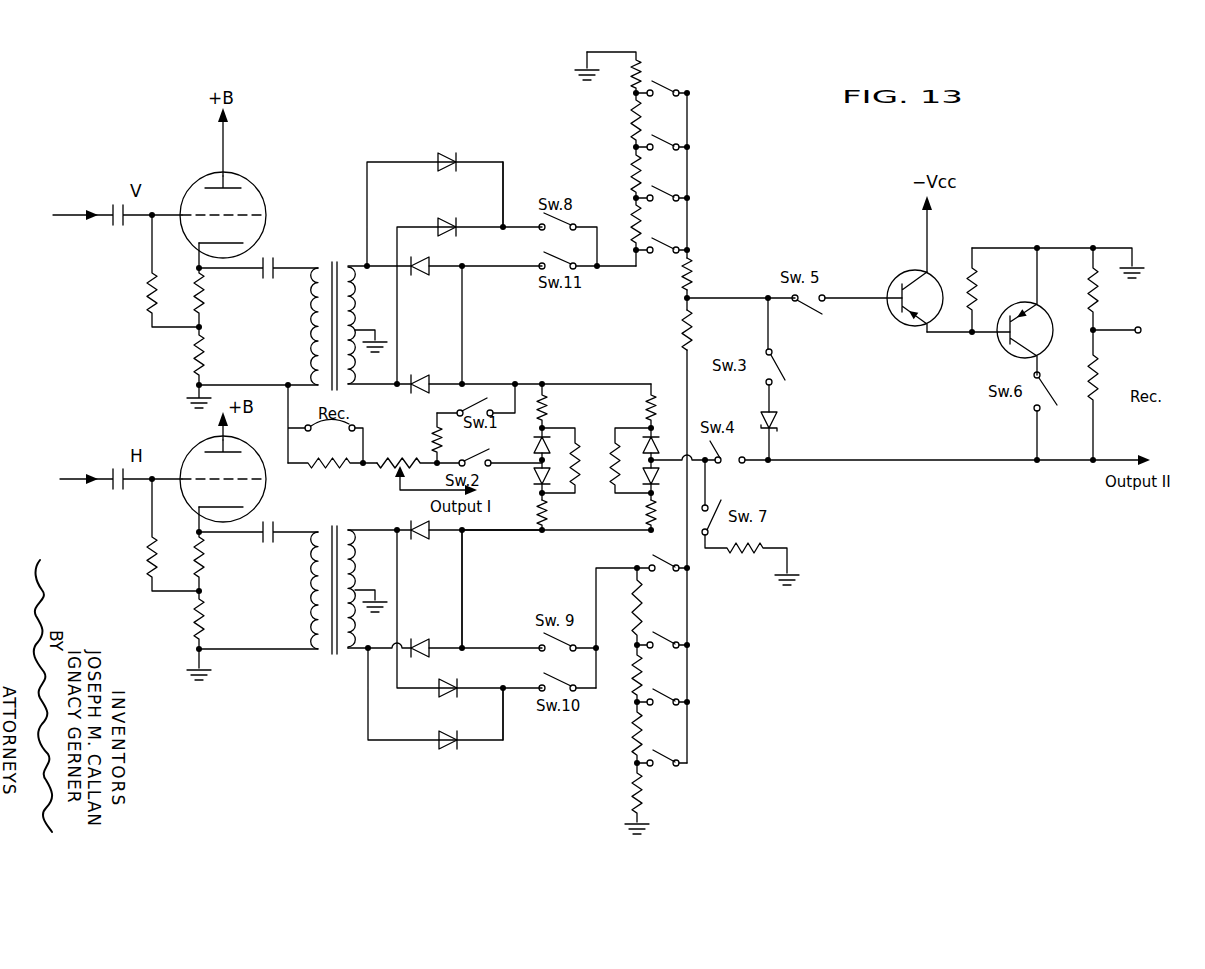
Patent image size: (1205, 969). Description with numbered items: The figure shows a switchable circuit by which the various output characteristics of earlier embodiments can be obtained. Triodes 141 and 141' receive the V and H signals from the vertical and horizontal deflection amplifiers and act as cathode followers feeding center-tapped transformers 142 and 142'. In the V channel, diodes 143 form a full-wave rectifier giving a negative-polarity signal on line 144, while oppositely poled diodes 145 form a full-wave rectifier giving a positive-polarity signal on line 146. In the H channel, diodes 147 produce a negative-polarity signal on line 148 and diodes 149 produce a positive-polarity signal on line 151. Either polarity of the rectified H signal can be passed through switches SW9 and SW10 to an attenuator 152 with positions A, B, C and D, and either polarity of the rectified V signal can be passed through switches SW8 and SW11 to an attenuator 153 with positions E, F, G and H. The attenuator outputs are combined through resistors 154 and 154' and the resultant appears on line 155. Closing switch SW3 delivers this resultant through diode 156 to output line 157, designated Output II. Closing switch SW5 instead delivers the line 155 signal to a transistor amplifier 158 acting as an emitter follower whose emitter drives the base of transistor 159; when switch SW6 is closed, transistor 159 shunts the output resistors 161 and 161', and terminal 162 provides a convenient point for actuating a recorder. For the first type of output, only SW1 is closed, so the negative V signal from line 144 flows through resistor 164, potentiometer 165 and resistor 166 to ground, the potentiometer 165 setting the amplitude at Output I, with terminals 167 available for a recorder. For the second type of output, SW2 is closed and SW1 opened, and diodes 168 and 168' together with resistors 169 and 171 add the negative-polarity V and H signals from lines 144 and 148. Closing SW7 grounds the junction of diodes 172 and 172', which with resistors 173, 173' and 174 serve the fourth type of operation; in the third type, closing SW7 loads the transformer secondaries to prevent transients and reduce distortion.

The triode 141 is at (247, 209).
The triode 141' is at (211, 468).
The center-tapped transformer 142 is at (349, 305).
The center-tapped transformer 142' is at (349, 577).
The diodes 143 is at (420, 277).
The line 144 is at (463, 312).
The diodes 145 is at (453, 200).
The line 146 is at (503, 181).
The diodes 147 is at (420, 541).
The line 148 is at (463, 582).
The diodes 149 is at (448, 706).
The line 151 is at (505, 718).
The attenuator 152 is at (678, 632).
The attenuator 153 is at (676, 181).
The resistor 154 is at (714, 266).
The resistor 154' is at (655, 330).
The line 155 is at (718, 298).
The diode 156 is at (780, 420).
The output line 157 is at (940, 462).
The transistor amplifier 158 is at (900, 273).
The transistor 159 is at (1002, 350).
The output resistor 161 is at (1125, 289).
The output resistor 161' is at (1127, 395).
The terminal 162 is at (1118, 334).
The resistor 164 is at (435, 434).
The potentiometer 165 is at (400, 460).
The resistor 166 is at (332, 474).
The terminals 167 is at (325, 424).
The diode 168 is at (523, 439).
The diode 168' is at (522, 484).
The resistor 169 is at (552, 405).
The resistor 171 is at (578, 452).
The diode 172 is at (665, 435).
The diode 172' is at (668, 485).
The resistor 173 is at (627, 409).
The resistor 173' is at (628, 515).
The resistor 174 is at (612, 465).